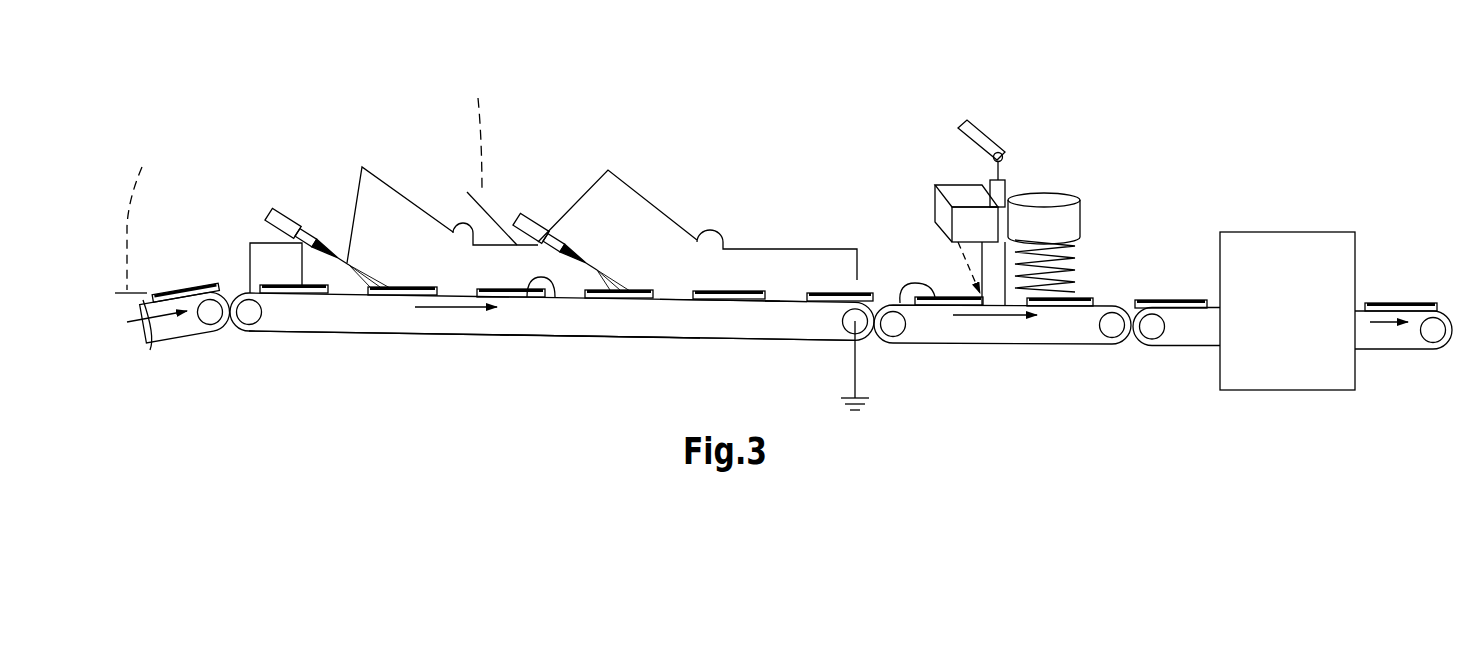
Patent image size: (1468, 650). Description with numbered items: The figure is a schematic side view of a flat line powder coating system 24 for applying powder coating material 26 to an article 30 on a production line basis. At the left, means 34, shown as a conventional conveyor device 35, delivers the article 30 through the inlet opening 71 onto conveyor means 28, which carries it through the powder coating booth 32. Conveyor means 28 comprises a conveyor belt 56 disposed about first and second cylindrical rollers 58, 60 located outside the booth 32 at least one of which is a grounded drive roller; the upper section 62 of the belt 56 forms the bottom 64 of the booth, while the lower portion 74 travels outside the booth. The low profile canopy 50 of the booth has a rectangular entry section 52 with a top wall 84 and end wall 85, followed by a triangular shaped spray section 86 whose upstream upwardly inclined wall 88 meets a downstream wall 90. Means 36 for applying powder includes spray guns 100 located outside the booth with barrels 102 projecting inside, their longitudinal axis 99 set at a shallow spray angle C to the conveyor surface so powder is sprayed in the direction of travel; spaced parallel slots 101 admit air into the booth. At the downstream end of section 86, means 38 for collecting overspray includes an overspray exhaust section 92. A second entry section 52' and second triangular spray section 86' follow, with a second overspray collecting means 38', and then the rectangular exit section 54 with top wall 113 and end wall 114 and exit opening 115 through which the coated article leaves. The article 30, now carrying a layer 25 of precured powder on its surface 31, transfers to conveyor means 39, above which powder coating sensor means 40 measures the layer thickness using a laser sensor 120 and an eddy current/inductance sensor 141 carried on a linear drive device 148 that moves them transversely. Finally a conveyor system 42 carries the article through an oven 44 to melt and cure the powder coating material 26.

The powder coating system 24 is at (554, 146).
The layer of powder coating material 25 is at (505, 288).
The powder coating material 26 is at (350, 260).
The conveyor means 28 is at (362, 344).
The article 30 is at (183, 287).
The surface of article 31 is at (555, 298).
The powder coating booth 32 is at (346, 164).
The means for delivering article 34 is at (179, 350).
The conveyor device 35 is at (150, 350).
The means for applying powder coating material 36 is at (272, 204).
The means for collecting powder overspray 38 is at (474, 196).
The means for collecting overspray 38' is at (770, 193).
The conveyor means 39 is at (961, 353).
The powder coating sensor means 40 is at (911, 132).
The conveyor system 42 is at (1183, 367).
The oven 44 is at (1271, 229).
The canopy 50 is at (627, 172).
The entry section 52 is at (204, 207).
The second entry section 52' is at (495, 203).
The exit section 54 is at (760, 241).
The conveyor belt 56 is at (673, 338).
The first cylindrical roller 58 is at (248, 318).
The second cylindrical roller 60 is at (845, 331).
The upper section of belt 62 is at (690, 301).
The bottom of powder coating booth 64 is at (784, 292).
The inlet opening 71 is at (240, 282).
The lower portion of belt 74 is at (645, 338).
The top wall 84 is at (252, 242).
The end wall 85 is at (249, 272).
The triangular shaped spray section 86 is at (345, 116).
The second triangular shaped spray section 86' is at (590, 130).
The upstream upwardly inclined wall 88 is at (323, 200).
The downstream wall 90 is at (395, 190).
The overspray exhaust section 92 is at (458, 212).
The longitudinal axis 99 is at (478, 133).
The spray guns 100 is at (278, 226).
The spaced parallel slots 101 is at (140, 217).
The barrels 102 is at (301, 228).
The top wall 113 is at (805, 248).
The end wall 114 is at (858, 262).
The exit opening 115 is at (865, 282).
The laser sensor 120 is at (949, 167).
The eddy current/inductance sensor 141 is at (1049, 180).
The linear drive device 148 is at (981, 137).
The spray angle C is at (445, 288).